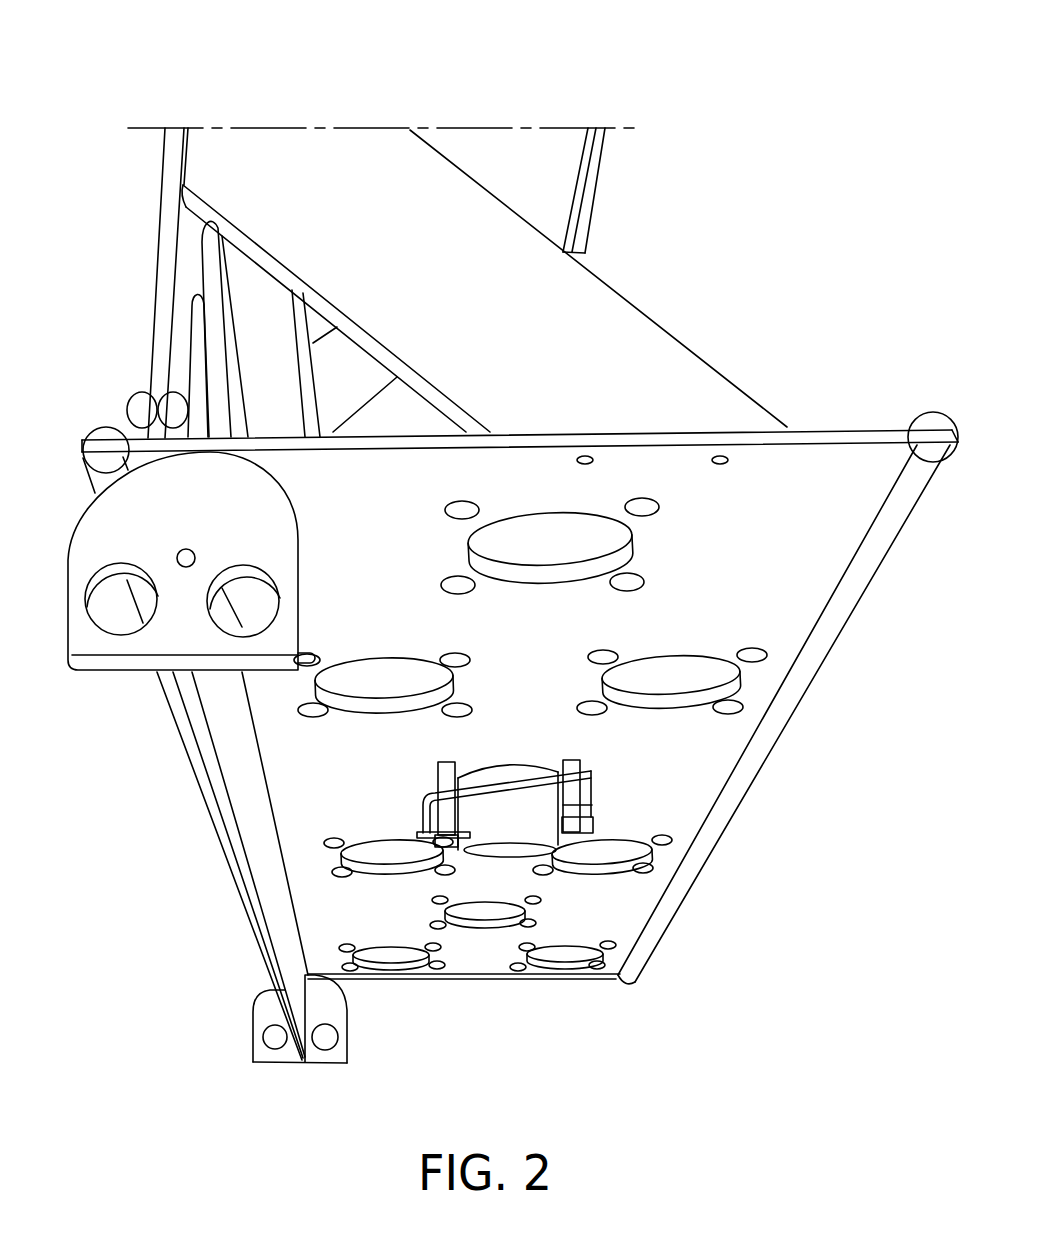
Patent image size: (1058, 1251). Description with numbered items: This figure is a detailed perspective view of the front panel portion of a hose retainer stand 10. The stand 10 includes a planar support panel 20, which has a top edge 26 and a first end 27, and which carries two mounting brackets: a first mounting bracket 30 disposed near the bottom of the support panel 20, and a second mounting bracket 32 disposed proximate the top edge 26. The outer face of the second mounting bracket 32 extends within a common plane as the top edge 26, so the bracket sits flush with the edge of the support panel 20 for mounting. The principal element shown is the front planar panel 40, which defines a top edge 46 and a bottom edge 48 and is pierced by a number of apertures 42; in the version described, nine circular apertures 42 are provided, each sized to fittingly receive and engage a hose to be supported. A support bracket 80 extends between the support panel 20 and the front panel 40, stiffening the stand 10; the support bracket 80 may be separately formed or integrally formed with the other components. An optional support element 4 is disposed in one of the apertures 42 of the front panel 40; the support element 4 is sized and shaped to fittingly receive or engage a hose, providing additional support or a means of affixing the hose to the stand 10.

The hose retainer stand 10 is at (95, 84).
The planar support panel 20 is at (125, 283).
The top edge 26 is at (160, 295).
The first end 27 is at (155, 432).
The second mounting bracket 32 is at (123, 543).
The first mounting bracket 30 is at (330, 1007).
The front planar panel 40 is at (785, 515).
The apertures 42 is at (548, 573).
The top edge 46 is at (680, 440).
The bottom edge 48 is at (500, 975).
The support bracket 80 is at (582, 322).
The support element 4 is at (423, 822).